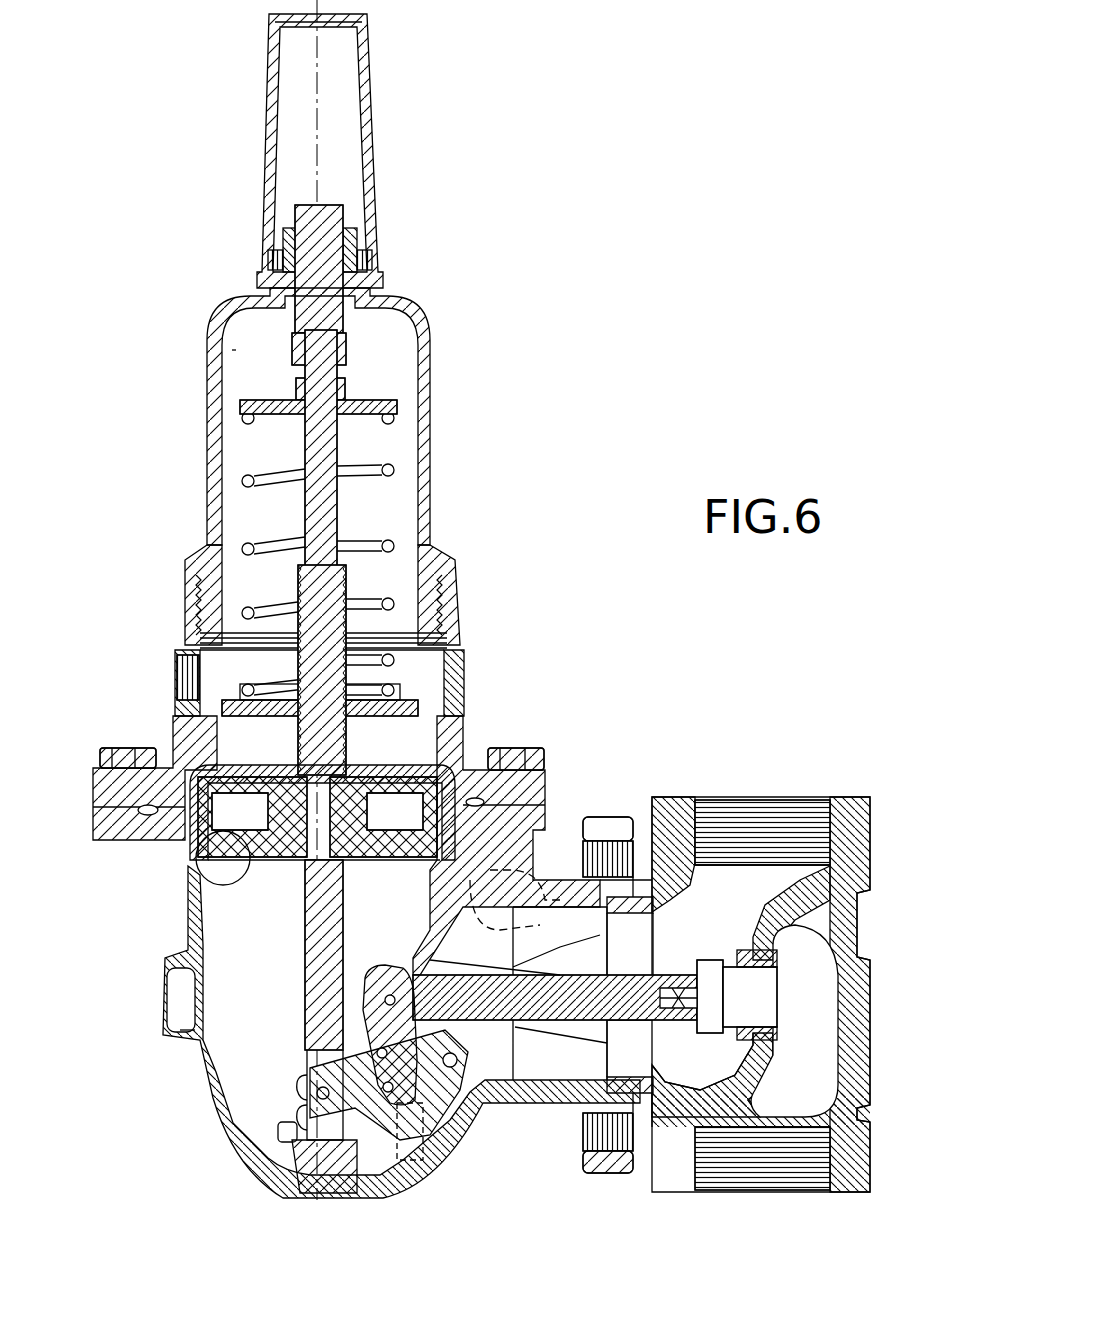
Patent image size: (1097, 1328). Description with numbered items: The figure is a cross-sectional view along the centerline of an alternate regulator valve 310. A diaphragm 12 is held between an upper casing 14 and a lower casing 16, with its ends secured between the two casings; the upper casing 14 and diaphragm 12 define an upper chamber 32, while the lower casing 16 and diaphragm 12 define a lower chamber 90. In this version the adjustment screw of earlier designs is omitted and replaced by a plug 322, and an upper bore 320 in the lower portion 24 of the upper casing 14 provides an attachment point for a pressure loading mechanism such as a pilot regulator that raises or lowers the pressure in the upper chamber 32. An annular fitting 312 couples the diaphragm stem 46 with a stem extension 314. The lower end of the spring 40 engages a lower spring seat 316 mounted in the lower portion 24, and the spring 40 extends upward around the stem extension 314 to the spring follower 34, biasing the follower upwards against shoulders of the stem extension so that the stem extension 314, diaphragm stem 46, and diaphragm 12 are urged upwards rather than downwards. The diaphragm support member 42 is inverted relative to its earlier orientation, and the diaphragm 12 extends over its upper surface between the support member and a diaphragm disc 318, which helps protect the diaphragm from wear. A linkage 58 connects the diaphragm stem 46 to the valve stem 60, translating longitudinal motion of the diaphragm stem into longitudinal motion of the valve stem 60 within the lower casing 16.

The regulator valve 310 is at (482, 157).
The upper casing 14 is at (127, 570).
The plug 322 is at (393, 290).
The lower portion 24 is at (458, 612).
The upper bore 320 is at (160, 674).
The spring 40 is at (393, 472).
The spring follower 34 is at (352, 398).
The lower spring seat 316 is at (352, 356).
The stem extension 314 is at (340, 440).
The annular fitting 312 is at (340, 578).
The upper chamber 32 is at (269, 371).
The diaphragm disc 318 is at (178, 766).
The diaphragm 12 is at (100, 792).
The diaphragm support member 42 is at (205, 872).
The lower casing 16 is at (180, 924).
The lower chamber 90 is at (268, 1041).
The diaphragm stem 46 is at (347, 962).
The valve stem 60 is at (446, 975).
The linkage 58 is at (466, 1132).